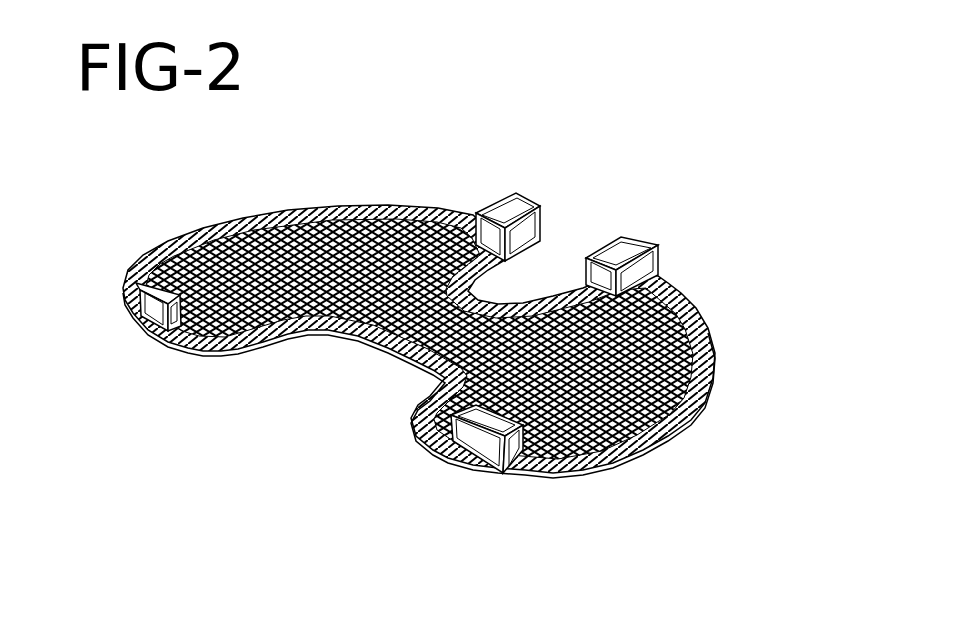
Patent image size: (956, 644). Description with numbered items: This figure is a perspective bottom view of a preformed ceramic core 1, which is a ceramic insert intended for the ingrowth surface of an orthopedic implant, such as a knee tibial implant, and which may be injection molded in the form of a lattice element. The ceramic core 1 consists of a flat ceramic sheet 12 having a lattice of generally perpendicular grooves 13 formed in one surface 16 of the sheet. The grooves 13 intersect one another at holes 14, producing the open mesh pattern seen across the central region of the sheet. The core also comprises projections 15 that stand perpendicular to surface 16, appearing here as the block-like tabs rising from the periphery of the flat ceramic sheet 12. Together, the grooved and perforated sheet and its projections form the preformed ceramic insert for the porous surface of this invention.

The ceramic core 1 is at (648, 187).
The flat ceramic sheet 12 is at (687, 403).
The grooves 13 is at (505, 456).
The holes 14 is at (617, 422).
The projections 15 is at (147, 307).
The surface 16 is at (209, 333).